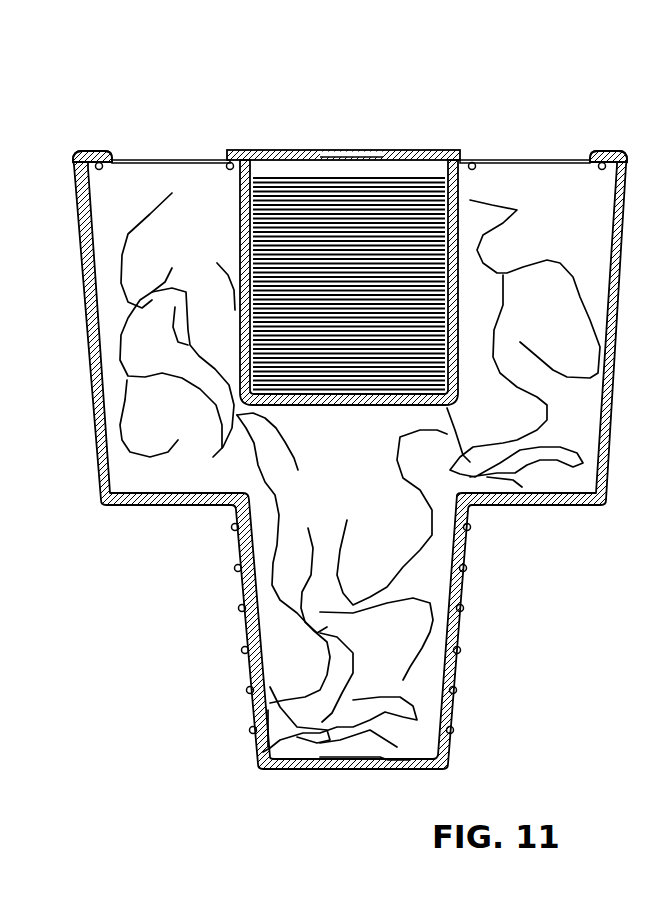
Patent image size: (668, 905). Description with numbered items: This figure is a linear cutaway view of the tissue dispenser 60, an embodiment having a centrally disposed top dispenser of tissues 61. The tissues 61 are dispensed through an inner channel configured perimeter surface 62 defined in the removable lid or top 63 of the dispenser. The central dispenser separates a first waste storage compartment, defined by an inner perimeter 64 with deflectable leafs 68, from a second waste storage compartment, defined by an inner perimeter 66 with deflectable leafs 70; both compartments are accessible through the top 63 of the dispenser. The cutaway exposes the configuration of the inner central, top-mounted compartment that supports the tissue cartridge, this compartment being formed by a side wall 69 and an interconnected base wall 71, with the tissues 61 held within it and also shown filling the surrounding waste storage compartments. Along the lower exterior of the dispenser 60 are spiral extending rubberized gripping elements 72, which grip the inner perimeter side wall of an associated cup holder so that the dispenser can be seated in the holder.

The tissue dispenser 60 is at (584, 99).
The tissues 61 is at (343, 178).
The inner channel configured perimeter surface 62 is at (328, 152).
The removable lid 63 is at (271, 149).
The inner perimeter 64 is at (110, 159).
The inner perimeter 66 is at (480, 157).
The deflectable leafs 68 is at (182, 160).
The side wall 69 is at (242, 236).
The deflectable leafs 70 is at (572, 158).
The base wall 71 is at (347, 406).
The rubberized gripping elements 72 is at (231, 528).